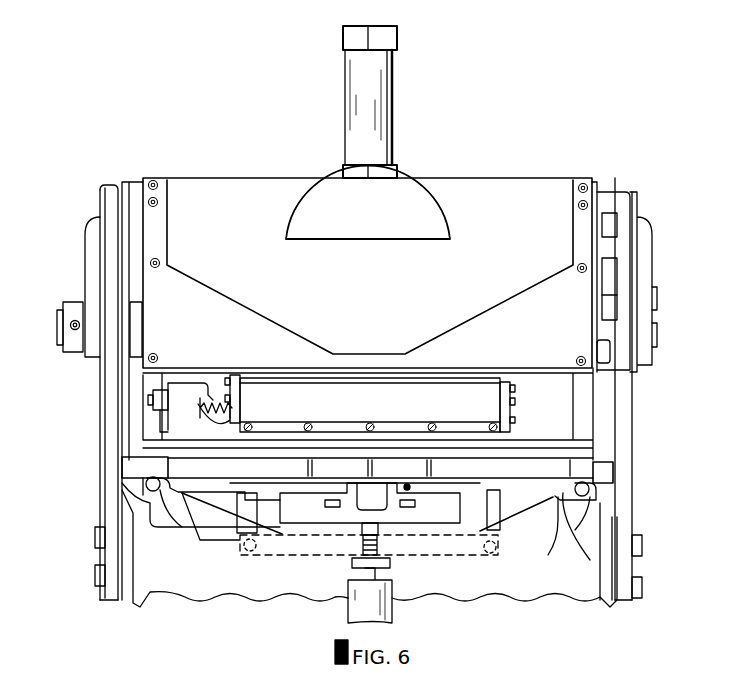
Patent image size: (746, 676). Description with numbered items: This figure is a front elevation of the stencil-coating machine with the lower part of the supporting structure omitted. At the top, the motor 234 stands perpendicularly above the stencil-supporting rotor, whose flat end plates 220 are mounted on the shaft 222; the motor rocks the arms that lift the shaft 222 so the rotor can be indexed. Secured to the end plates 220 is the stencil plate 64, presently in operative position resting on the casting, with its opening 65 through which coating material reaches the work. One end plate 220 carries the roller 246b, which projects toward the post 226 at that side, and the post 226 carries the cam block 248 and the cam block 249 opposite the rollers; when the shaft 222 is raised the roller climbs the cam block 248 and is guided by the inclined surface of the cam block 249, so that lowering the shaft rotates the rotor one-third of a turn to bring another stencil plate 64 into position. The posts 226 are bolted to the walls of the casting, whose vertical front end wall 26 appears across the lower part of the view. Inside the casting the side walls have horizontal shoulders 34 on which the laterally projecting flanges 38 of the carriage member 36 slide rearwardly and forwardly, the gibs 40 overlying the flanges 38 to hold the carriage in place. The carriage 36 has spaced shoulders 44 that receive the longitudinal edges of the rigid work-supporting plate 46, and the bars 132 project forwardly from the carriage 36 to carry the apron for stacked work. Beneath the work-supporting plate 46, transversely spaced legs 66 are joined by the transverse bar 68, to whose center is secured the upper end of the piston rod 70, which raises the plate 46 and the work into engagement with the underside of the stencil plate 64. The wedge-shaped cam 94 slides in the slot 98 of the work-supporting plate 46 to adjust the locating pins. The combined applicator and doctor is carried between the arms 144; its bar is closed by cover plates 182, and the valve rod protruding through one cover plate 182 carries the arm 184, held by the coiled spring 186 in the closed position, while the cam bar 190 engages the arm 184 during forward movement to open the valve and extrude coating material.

The motor 234 is at (360, 86).
The stencil plate 64 is at (476, 194).
The opening 65 is at (333, 252).
The cam block 249 is at (607, 200).
The cam block 248 is at (608, 270).
The roller 246b is at (610, 358).
The shaft 222 is at (128, 317).
The end plate 220 is at (150, 383).
The cam bar 190 is at (178, 383).
The spring 186 is at (212, 398).
The cover plate 182 is at (235, 385).
The arm 184 is at (231, 423).
The arm 144 is at (507, 408).
The bar 132 is at (140, 477).
The gib 40 is at (130, 460).
The flange 38 is at (145, 480).
The shoulder 34 is at (135, 486).
The shoulder 44 is at (142, 488).
The work-supporting plate 46 is at (190, 505).
The carriage member 36 is at (543, 522).
The leg 66 is at (240, 497).
The wedge-shaped cam 94 is at (345, 482).
The slot 98 is at (406, 486).
The transverse bar 68 is at (285, 553).
The piston rod 70 is at (350, 566).
The post 226 is at (117, 560).
The front end wall 26 is at (560, 587).